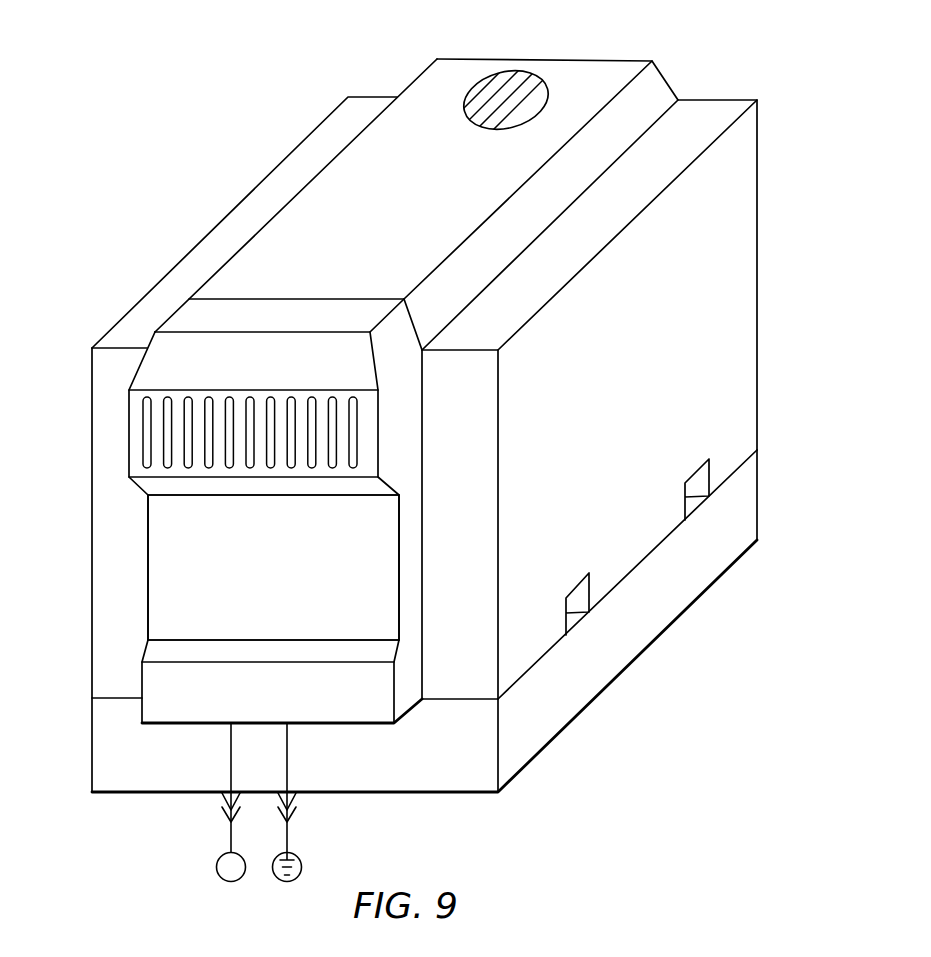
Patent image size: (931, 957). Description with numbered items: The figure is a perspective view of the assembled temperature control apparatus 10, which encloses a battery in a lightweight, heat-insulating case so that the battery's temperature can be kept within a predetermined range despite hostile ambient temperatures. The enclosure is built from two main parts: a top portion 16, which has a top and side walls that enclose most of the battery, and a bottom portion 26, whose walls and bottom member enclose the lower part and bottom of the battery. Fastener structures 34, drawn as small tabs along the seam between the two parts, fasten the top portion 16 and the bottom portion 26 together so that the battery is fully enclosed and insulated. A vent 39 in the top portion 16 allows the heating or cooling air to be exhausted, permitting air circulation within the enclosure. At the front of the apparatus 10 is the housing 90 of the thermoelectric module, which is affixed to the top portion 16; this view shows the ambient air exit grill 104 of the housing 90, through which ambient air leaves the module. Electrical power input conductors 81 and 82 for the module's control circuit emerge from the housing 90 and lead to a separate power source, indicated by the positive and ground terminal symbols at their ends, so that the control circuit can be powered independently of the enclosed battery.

The temperature control apparatus 10 is at (442, 447).
The top portion 16 is at (476, 355).
The bottom portion 26 is at (476, 620).
The fastener structures 34 is at (575, 618).
The vent 39 is at (507, 90).
The electrical power input conductor 81 is at (231, 757).
The electrical power input conductor 82 is at (287, 757).
The housing 90 is at (284, 577).
The ambient air exit grill 104 is at (155, 430).